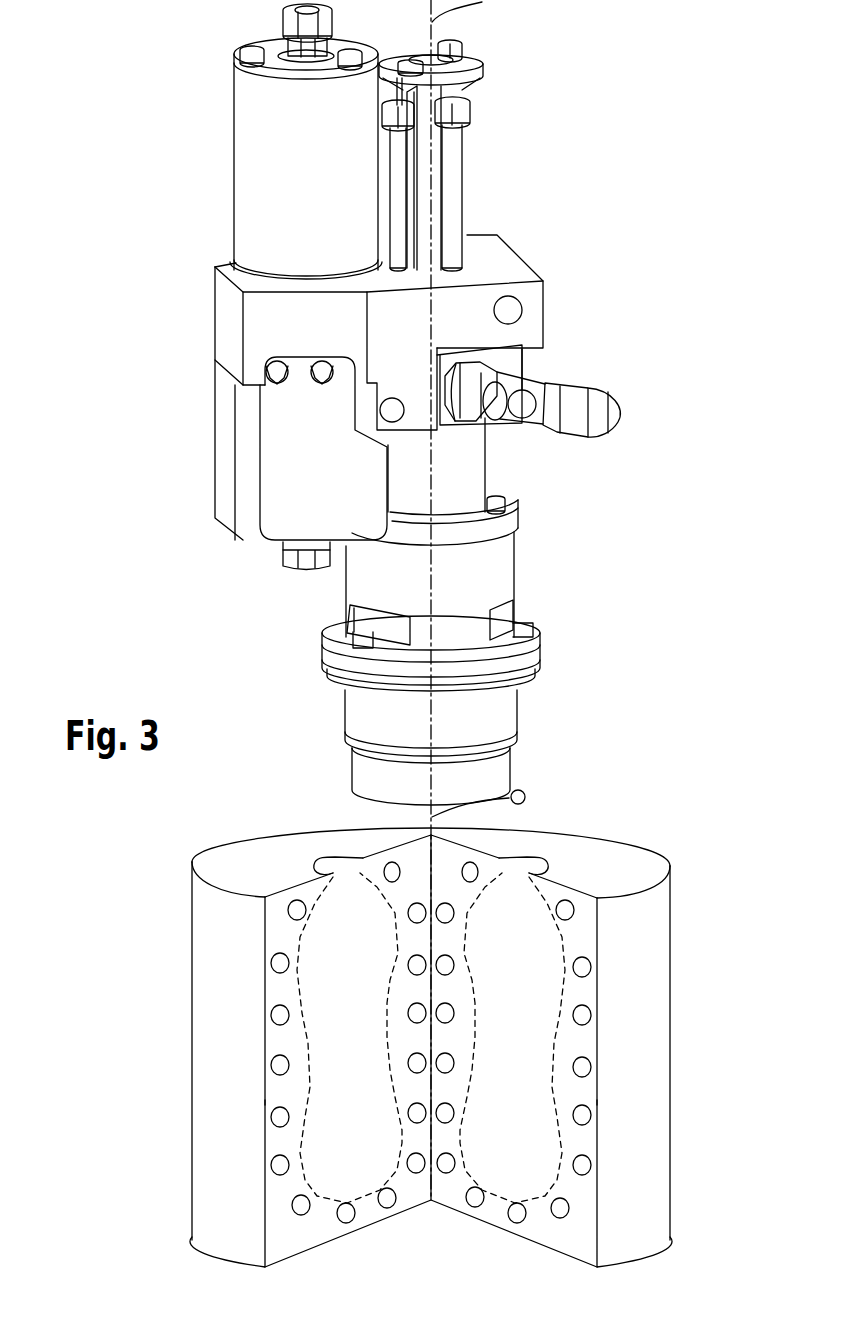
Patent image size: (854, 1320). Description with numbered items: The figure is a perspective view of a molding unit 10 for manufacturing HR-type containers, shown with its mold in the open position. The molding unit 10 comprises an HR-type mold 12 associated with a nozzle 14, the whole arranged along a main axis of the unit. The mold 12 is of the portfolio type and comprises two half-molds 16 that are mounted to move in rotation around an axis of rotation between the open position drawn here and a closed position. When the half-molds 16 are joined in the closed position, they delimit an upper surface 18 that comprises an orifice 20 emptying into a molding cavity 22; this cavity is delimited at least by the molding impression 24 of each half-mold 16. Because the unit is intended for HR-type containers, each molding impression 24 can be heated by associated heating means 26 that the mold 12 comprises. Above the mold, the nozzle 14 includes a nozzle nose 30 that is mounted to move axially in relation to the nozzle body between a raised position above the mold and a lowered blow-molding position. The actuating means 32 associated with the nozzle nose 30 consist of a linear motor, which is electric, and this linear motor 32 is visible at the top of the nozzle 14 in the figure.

The molding unit 10 is at (645, 195).
The mold 12 is at (627, 809).
The nozzle 14 is at (572, 611).
The half-mold 16 is at (281, 1090).
The upper surface 18 is at (457, 457).
The orifice 20 is at (520, 858).
The molding cavity 22 is at (334, 1160).
The molding impression 24 is at (331, 1125).
The heating means 26 is at (282, 963).
The nozzle nose 30 is at (490, 718).
The actuating means 32 is at (298, 162).